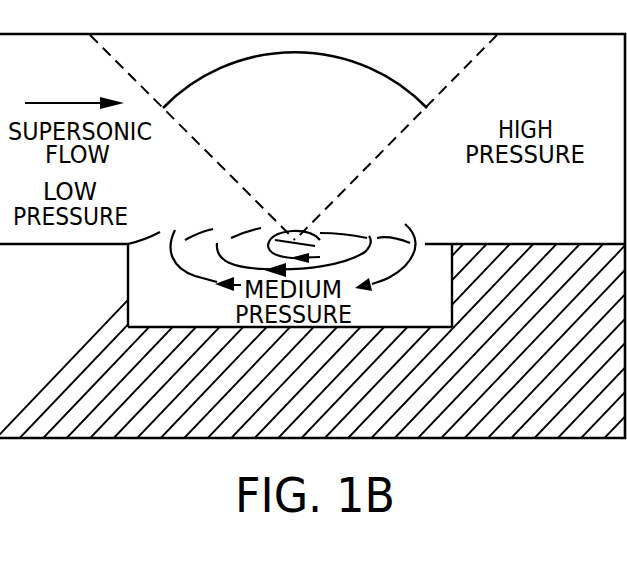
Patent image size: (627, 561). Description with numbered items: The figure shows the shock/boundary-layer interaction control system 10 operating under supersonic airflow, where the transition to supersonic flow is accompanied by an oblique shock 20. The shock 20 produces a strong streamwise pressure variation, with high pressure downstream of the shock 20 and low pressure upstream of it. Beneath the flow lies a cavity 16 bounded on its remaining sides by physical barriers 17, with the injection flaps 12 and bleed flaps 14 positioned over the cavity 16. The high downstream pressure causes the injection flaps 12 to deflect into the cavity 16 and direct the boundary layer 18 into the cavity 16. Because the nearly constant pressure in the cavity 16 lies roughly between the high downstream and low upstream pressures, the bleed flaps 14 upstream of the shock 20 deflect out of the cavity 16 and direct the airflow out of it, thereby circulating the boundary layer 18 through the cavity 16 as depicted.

The shock/boundary-layer interaction control system 10 is at (426, 226).
The injection flaps 12 is at (378, 228).
The bleed flaps 14 is at (199, 226).
The cavity 16 is at (192, 314).
The physical barriers 17 is at (127, 280).
The boundary layer 18 is at (400, 262).
The oblique shock 20 is at (268, 56).